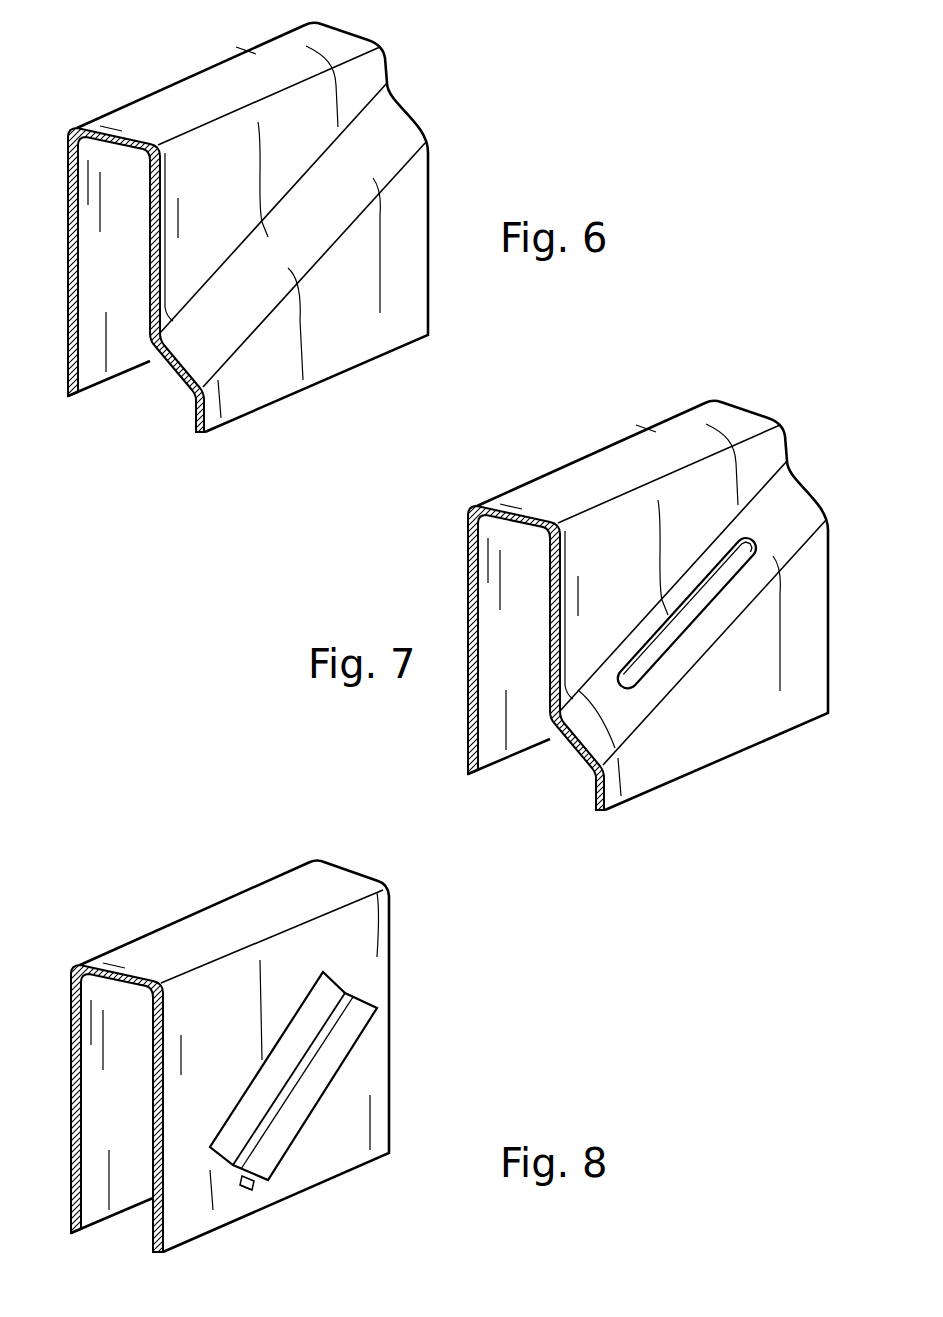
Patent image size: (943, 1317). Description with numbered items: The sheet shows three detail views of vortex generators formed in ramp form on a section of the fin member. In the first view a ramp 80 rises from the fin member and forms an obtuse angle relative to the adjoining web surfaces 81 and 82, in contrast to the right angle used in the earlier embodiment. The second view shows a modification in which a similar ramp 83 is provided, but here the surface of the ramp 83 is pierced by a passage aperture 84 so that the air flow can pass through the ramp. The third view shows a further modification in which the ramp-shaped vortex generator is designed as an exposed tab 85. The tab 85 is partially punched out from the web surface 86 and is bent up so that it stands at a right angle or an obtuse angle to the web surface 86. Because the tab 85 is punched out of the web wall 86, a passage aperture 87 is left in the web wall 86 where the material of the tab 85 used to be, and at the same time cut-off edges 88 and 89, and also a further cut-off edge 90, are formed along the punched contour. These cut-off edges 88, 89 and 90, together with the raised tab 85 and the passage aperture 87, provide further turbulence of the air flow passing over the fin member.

In FIG. 6, the ramp 80 is at (387, 132).
In FIG. 6, the web surface 81 is at (226, 146).
In FIG. 6, the web surface 82 is at (321, 353).
In FIG. 7, the ramp 83 is at (788, 510).
In FIG. 7, the passage aperture 84 is at (643, 673).
In FIG. 8, the tab 85 is at (308, 1082).
In FIG. 8, the web surface 86 is at (337, 1153).
In FIG. 8, the passage aperture 87 is at (255, 1186).
In FIG. 8, the cut-off edge 88 is at (350, 994).
In FIG. 8, the cut-off edge 89 is at (243, 1183).
In FIG. 8, the cut-off edge 90 is at (317, 1112).